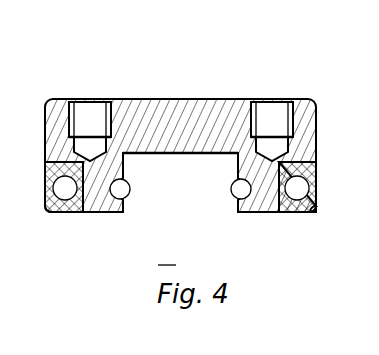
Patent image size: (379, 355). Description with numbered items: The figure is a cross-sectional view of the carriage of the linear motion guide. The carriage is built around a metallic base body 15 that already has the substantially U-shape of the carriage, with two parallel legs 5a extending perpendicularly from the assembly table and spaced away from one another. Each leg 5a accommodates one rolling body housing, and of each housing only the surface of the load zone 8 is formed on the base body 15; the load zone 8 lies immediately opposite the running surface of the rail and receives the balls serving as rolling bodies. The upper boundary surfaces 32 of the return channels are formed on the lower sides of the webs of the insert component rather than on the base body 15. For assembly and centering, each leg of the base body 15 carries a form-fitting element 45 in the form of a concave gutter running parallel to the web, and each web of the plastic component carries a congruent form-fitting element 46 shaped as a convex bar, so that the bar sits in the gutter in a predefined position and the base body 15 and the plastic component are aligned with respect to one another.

The base body 15 is at (182, 99).
The form-fitting element 45 is at (91, 162).
The form-fitting element 46 is at (91, 162).
The upper boundary surface 32 is at (50, 182).
The load zone 8 is at (133, 208).
The legs 5a is at (84, 214).